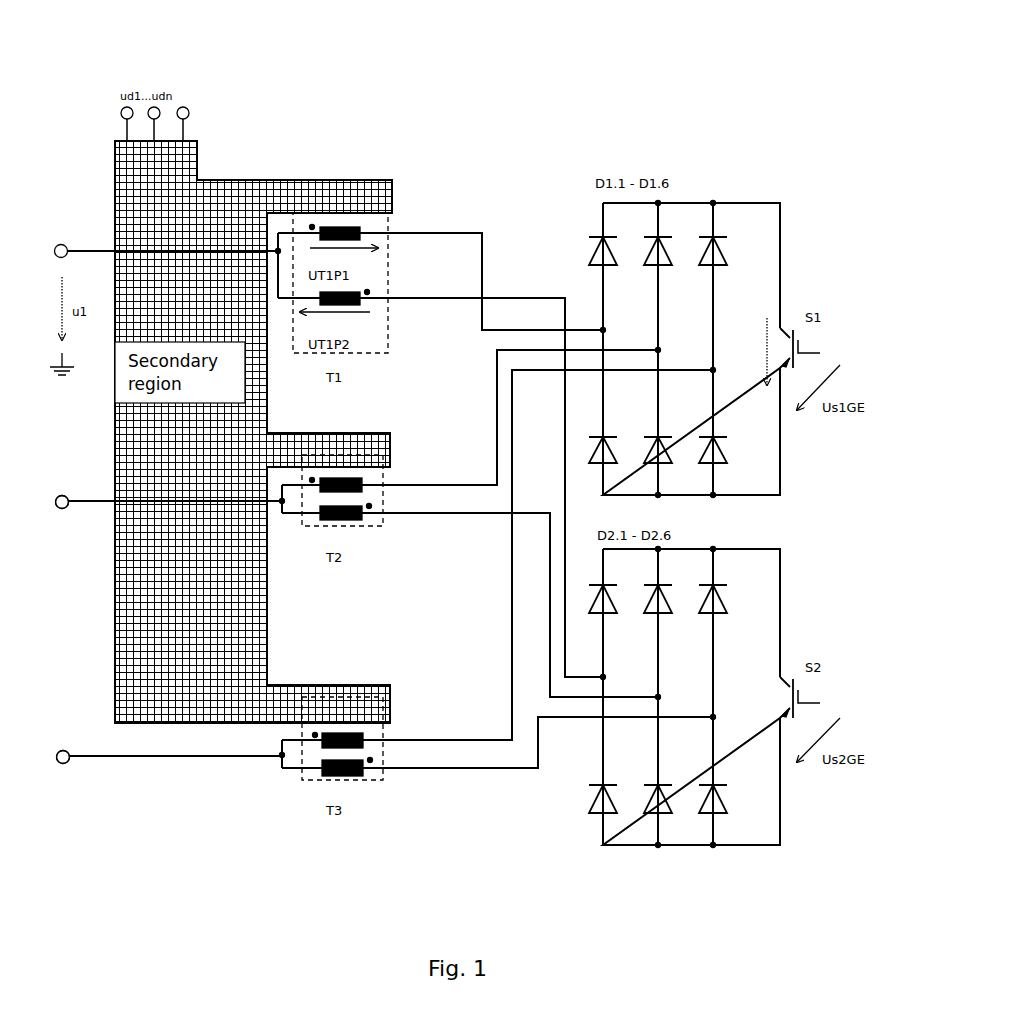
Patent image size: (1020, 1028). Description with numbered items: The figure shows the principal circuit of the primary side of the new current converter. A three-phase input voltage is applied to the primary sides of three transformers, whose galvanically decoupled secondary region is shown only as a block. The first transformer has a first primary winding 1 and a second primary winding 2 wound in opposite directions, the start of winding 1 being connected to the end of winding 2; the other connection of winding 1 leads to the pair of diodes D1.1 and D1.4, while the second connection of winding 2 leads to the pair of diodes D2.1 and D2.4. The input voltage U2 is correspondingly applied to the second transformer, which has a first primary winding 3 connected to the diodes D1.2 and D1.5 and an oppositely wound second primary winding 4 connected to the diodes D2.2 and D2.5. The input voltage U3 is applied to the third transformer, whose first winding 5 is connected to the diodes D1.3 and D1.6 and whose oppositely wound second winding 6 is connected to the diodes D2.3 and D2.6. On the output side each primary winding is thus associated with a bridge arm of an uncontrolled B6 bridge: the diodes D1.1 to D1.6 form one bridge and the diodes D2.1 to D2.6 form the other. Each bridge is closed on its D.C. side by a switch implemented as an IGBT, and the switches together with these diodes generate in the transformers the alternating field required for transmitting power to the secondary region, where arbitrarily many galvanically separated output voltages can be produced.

The first primary winding 1 is at (322, 227).
The second primary winding 2 is at (332, 292).
The first primary winding 3 is at (360, 482).
The second primary winding 4 is at (345, 520).
The first winding 5 is at (335, 733).
The second winding 6 is at (340, 775).
The diode D1.1 is at (567, 243).
The diode D1.2 is at (658, 247).
The diode D1.3 is at (718, 246).
The diode D1.4 is at (590, 393).
The diode D1.5 is at (663, 455).
The diode D1.6 is at (716, 448).
The diode D2.1 is at (608, 590).
The diode D2.2 is at (647, 664).
The diode D2.3 is at (722, 601).
The diode D2.4 is at (582, 815).
The diode D2.5 is at (647, 825).
The diode D2.6 is at (722, 798).
The input voltage U2 is at (78, 505).
The input voltage U3 is at (80, 760).